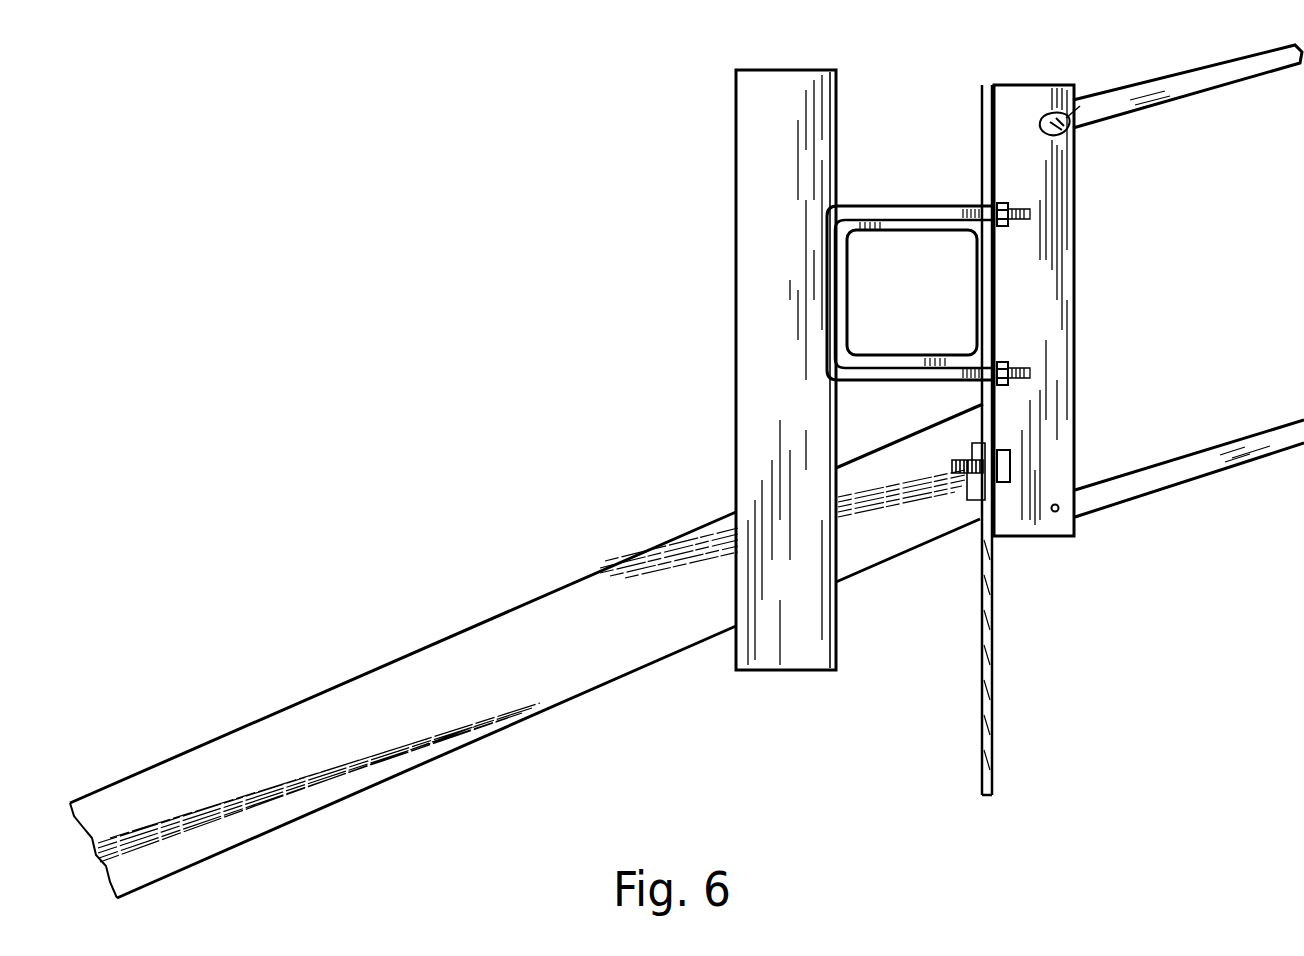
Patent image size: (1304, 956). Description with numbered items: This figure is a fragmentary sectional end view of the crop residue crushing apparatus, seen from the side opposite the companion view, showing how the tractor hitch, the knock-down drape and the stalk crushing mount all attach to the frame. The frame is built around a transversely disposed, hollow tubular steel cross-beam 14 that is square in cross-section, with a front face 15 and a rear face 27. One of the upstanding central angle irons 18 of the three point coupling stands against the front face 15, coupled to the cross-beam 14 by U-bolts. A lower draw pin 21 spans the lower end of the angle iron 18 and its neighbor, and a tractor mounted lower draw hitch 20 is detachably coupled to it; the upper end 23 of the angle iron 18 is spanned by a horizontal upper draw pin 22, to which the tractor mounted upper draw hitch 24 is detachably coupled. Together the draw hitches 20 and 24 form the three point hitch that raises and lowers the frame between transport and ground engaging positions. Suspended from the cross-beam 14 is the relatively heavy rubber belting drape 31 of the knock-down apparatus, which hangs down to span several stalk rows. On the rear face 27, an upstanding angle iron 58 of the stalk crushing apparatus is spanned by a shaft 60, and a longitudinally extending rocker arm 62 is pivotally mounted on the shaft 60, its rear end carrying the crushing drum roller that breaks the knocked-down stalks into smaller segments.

The cross-beam 14 is at (900, 233).
The front face 15 is at (998, 302).
The central angle iron 18 is at (1013, 85).
The lower draw hitch 20 is at (1187, 455).
The lower draw pin 21 is at (1053, 512).
The upper draw pin 22 is at (1078, 104).
The upper end 23 is at (1065, 83).
The upper draw hitch 24 is at (1233, 60).
The rear face 27 is at (840, 272).
The drape 31 is at (996, 692).
The angle iron 58 is at (752, 162).
The shaft 60 is at (779, 543).
The rocker arm 62 is at (503, 732).